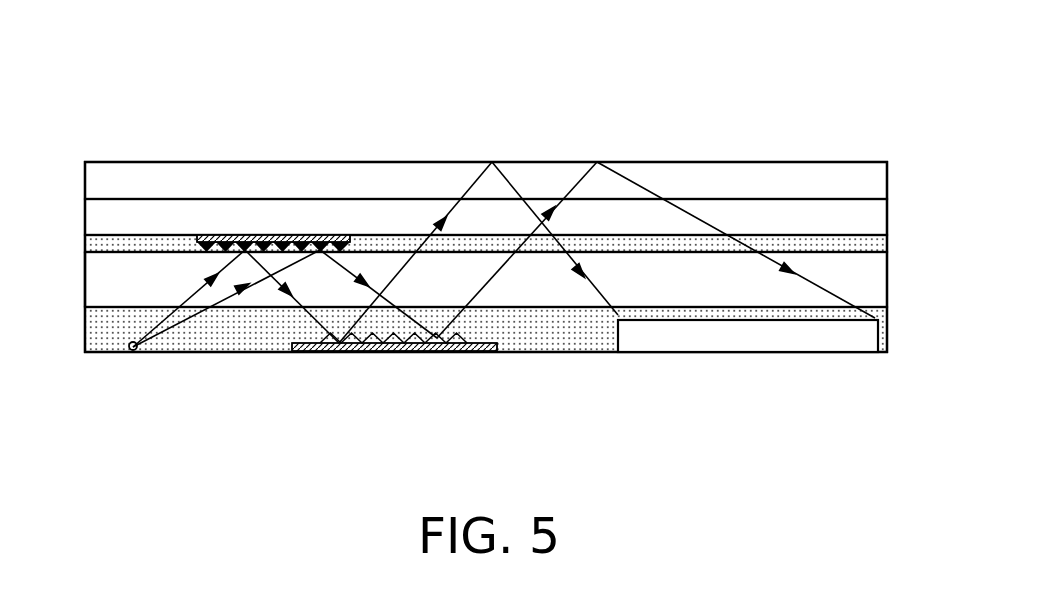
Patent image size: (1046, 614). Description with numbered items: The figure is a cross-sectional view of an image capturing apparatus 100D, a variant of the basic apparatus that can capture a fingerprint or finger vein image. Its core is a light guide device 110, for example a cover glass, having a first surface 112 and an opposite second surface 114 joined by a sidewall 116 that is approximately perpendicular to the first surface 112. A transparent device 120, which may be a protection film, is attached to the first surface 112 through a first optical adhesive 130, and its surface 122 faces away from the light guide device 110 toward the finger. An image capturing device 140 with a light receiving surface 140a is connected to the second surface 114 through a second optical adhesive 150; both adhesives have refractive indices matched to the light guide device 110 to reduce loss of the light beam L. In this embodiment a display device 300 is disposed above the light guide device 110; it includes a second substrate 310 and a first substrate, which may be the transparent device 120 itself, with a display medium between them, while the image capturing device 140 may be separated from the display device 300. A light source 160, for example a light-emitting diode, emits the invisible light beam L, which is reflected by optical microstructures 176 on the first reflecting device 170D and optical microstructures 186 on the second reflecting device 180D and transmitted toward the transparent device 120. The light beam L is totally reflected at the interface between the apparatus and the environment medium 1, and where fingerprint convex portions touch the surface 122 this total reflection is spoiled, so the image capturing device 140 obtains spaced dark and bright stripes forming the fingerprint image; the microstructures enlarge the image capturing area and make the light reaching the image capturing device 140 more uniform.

The environment medium 1 is at (773, 45).
The image capturing apparatus 100D is at (945, 462).
The display device 300 is at (516, 142).
The second substrate 310 is at (863, 180).
The transparent device 120 is at (877, 212).
The surface 122 is at (807, 198).
The first optical adhesive 130 is at (887, 240).
The first surface 112 is at (845, 251).
The light guide device 110 is at (870, 278).
The sidewall 116 is at (85, 273).
The second surface 114 is at (823, 309).
The second optical adhesive 150 is at (880, 315).
The image capturing device 140 is at (703, 340).
The light receiving surface 140a is at (719, 310).
The first reflecting device 170D is at (273, 175).
The optical microstructures 176 is at (335, 233).
The second reflecting device 180D is at (394, 389).
The optical microstructures 186 is at (440, 350).
The light source 160 is at (133, 352).
The light beam L is at (166, 318).